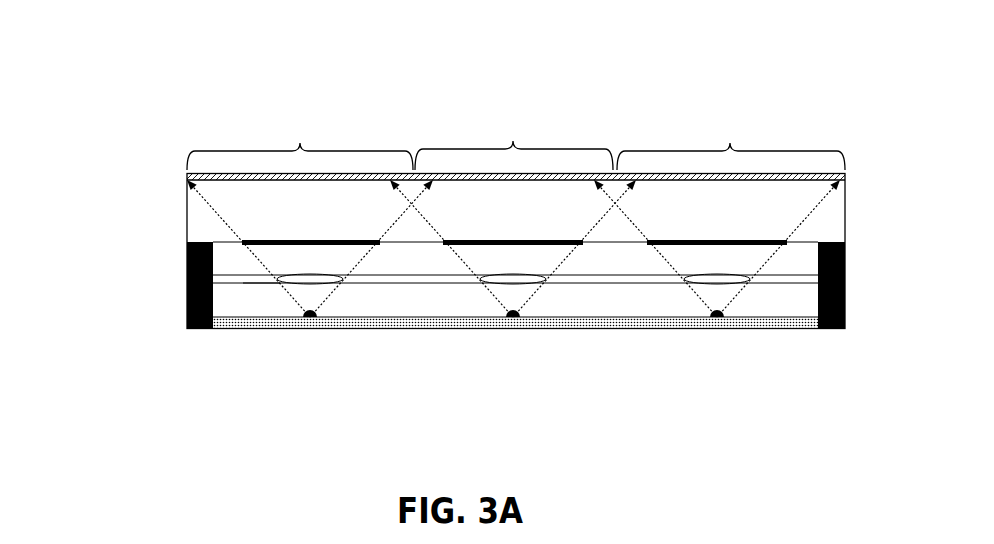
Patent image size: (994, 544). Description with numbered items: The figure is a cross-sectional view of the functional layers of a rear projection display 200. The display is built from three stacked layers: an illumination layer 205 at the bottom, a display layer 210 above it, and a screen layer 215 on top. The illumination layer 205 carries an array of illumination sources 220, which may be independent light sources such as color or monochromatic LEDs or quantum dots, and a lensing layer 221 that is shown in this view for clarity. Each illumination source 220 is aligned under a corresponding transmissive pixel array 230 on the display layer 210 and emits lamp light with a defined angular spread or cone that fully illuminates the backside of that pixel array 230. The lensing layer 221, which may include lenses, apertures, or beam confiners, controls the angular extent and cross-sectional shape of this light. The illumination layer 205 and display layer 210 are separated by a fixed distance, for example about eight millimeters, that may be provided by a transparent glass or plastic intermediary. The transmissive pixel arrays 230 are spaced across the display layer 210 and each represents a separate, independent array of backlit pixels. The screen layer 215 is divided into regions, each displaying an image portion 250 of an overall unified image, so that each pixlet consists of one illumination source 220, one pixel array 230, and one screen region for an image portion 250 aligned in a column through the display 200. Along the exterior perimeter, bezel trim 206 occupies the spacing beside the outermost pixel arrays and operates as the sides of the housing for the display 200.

The rear projection display 200 is at (190, 83).
The illumination layer 205 is at (175, 252).
The bezel trim 206 is at (833, 329).
The display layer 210 is at (176, 242).
The screen layer 215 is at (175, 225).
The illumination source 220 is at (312, 324).
The lensing layer 221 is at (252, 290).
The transmissive pixel array 230 is at (317, 241).
The image portion 250 is at (516, 131).